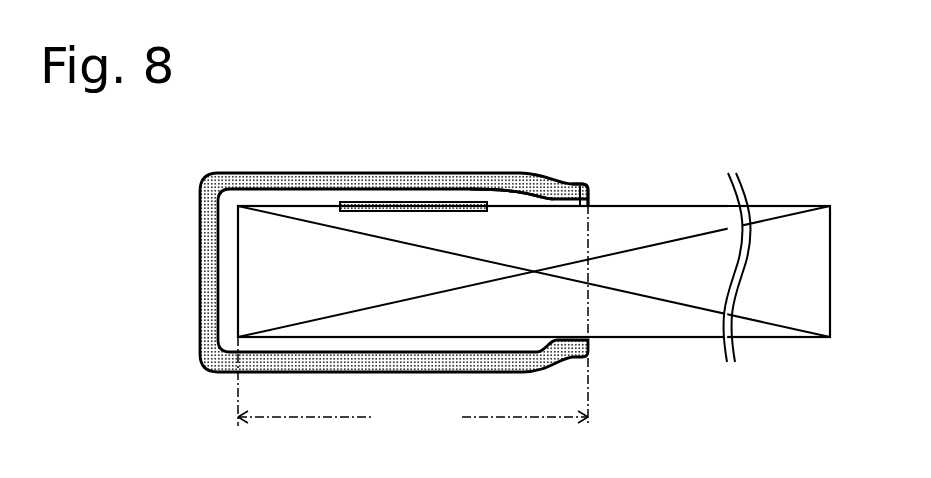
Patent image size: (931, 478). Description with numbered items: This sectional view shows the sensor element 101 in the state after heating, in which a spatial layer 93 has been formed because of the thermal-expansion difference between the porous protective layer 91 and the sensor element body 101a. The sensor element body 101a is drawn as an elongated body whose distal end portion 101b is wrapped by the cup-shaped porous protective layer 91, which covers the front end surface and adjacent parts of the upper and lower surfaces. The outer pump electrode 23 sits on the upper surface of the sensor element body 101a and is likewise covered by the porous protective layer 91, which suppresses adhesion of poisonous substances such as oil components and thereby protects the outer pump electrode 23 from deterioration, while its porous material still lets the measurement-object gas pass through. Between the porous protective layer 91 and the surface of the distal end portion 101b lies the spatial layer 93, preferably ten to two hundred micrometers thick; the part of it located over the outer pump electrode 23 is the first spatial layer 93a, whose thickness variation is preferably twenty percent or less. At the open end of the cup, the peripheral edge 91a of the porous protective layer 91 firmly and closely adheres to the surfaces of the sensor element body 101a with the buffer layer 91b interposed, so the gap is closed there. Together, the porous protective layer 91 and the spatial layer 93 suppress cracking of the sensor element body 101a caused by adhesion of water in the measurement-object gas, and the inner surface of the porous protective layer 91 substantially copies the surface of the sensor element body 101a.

The sensor element 101 is at (711, 125).
The sensor element body 101a is at (655, 228).
The distal end portion 101b is at (413, 317).
The porous protective layer 91 is at (278, 173).
The peripheral edge 91a is at (567, 185).
The buffer layer 91b is at (578, 185).
The spatial layer 93 is at (323, 179).
The first spatial layer 93a is at (465, 193).
The outer pump electrode 23 is at (420, 202).